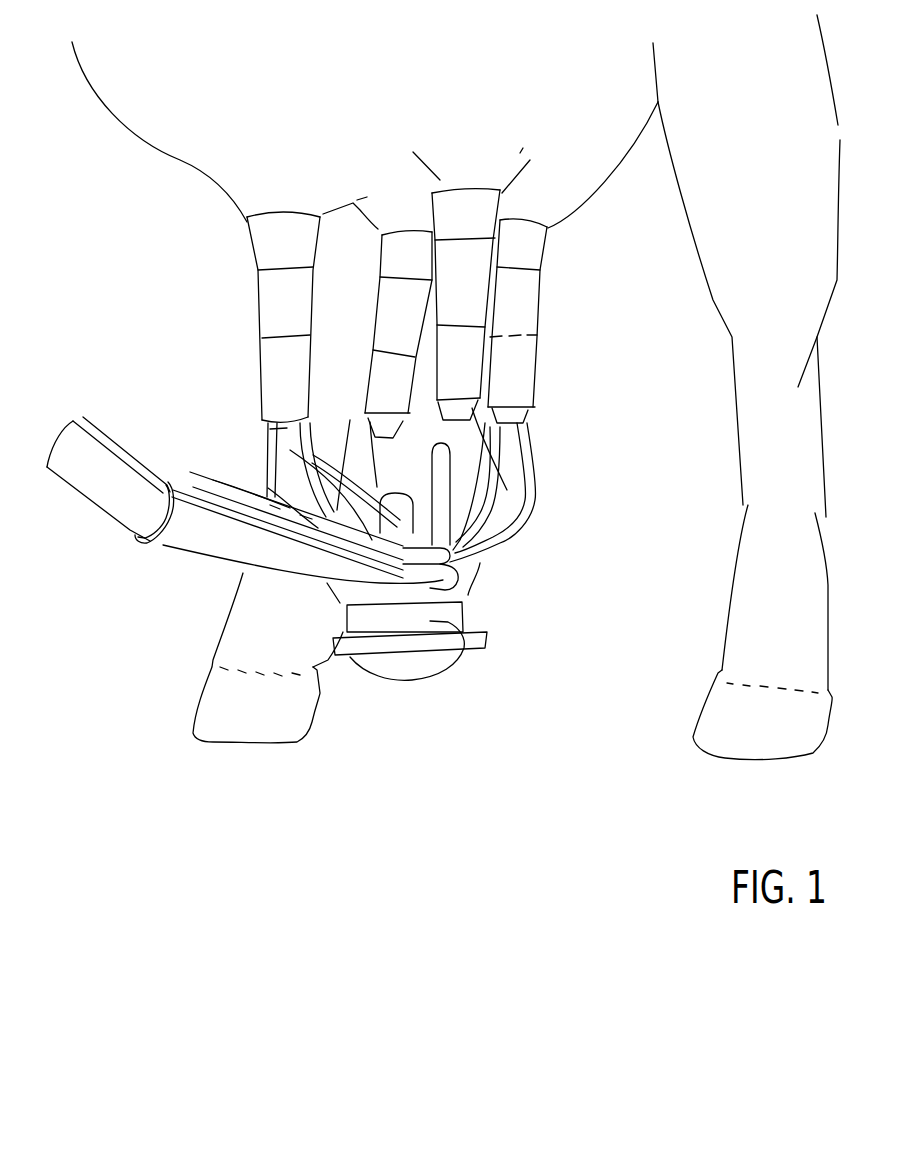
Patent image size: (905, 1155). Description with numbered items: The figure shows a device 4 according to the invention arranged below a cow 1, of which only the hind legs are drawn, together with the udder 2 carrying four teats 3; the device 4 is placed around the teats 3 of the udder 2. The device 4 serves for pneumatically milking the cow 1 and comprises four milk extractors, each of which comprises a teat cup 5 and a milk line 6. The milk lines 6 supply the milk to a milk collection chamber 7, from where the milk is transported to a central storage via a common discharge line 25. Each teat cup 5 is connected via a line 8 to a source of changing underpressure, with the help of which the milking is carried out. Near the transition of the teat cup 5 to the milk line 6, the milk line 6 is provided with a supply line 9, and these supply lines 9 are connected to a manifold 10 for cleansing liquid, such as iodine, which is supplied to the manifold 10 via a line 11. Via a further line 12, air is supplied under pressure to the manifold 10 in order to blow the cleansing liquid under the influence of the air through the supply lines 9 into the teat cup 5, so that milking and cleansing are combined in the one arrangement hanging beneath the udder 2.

The cow 1 is at (640, 560).
The udder 2 is at (182, 140).
The teats 3 is at (299, 199).
The device 4 is at (574, 447).
The teat cup 5 is at (282, 308).
The milk line 6 is at (266, 428).
The milk collection chamber 7 is at (460, 660).
The line 8 is at (268, 488).
The supply line 9 is at (313, 455).
The manifold 10 is at (438, 560).
The line 11 is at (213, 480).
The line 12 is at (117, 437).
The common discharge line 25 is at (207, 530).